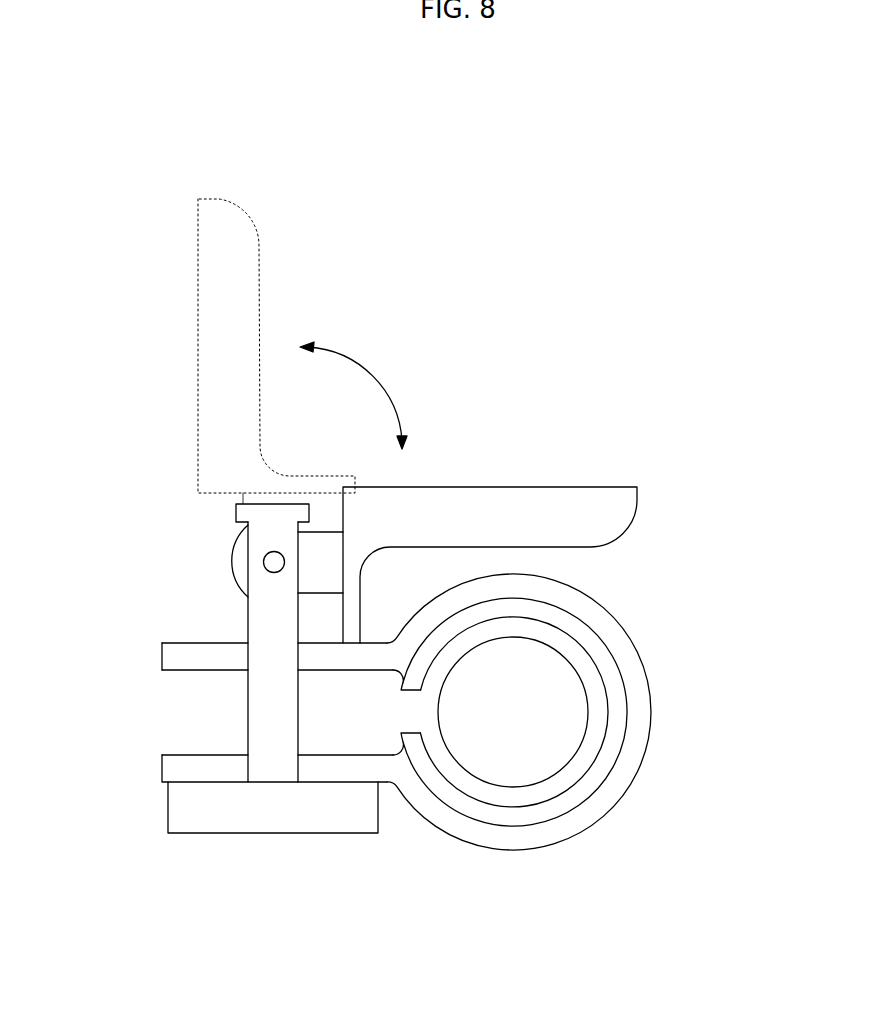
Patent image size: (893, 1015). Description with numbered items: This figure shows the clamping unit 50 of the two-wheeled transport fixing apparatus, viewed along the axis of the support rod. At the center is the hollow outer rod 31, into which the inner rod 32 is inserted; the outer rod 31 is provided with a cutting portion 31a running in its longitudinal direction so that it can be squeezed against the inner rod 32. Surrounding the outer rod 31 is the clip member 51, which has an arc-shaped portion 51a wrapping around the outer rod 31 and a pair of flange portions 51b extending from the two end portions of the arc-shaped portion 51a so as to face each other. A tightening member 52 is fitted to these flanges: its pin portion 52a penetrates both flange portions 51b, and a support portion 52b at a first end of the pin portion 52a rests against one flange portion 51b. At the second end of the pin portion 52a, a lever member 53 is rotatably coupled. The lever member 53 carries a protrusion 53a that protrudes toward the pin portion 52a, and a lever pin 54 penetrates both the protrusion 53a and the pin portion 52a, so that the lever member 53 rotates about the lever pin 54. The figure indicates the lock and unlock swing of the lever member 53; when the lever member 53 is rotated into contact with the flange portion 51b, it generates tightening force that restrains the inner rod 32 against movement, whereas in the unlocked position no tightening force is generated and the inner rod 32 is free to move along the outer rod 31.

The clamping unit 50 is at (547, 427).
The clip member 51 is at (517, 850).
The arc-shaped portion 51a is at (643, 722).
The flange portions 51b is at (167, 768).
The tightening member 52 is at (179, 836).
The pin portion 52a is at (258, 620).
The support portion 52b is at (248, 808).
The lever member 53 is at (233, 220).
The protrusion 53a is at (321, 552).
The lever pin 54 is at (263, 562).
The outer rod 31 is at (610, 677).
The cutting portion 31a is at (404, 732).
The inner rod 32 is at (588, 753).